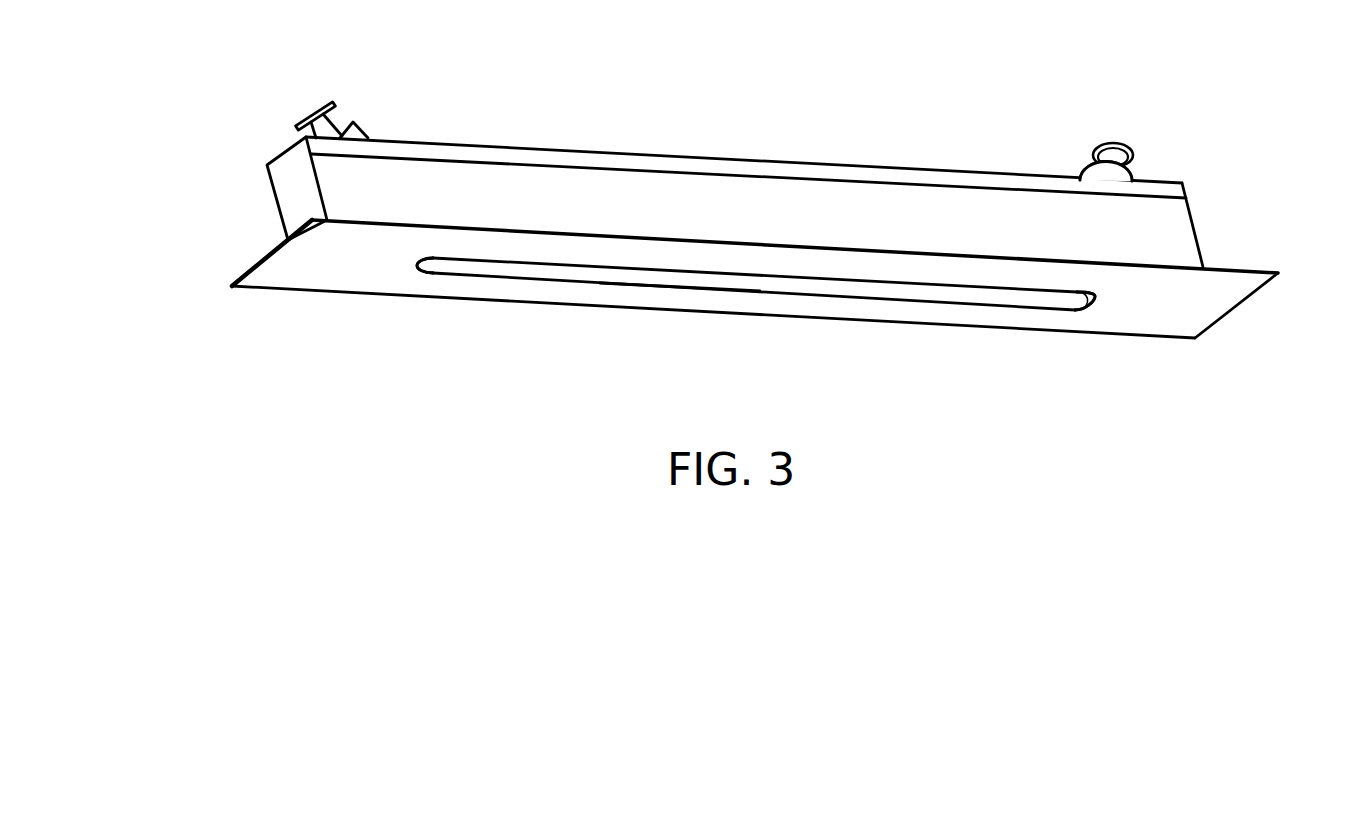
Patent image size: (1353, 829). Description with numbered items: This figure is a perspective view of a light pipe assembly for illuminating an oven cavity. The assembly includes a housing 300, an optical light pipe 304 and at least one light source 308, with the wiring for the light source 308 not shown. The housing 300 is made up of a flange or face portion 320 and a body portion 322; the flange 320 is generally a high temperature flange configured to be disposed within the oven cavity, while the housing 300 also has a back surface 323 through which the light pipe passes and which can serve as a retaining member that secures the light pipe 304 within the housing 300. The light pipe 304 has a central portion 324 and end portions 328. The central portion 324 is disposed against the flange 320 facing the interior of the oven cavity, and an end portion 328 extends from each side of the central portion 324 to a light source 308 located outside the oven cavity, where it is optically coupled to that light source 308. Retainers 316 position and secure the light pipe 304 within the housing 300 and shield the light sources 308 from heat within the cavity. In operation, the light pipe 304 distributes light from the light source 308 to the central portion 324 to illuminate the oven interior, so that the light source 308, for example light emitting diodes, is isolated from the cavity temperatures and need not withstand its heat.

The housing 300 is at (245, 235).
The optical light pipe 304 is at (910, 295).
The light source 308 is at (308, 112).
The retainer 316 is at (367, 131).
The flange 320 is at (265, 277).
The body portion 322 is at (1175, 237).
The back surface 323 is at (822, 162).
The central portion 324 is at (660, 290).
The end portion 328 is at (433, 268).